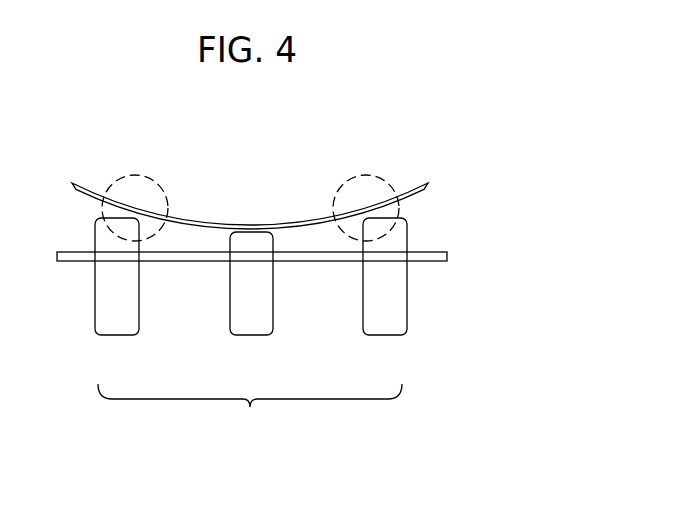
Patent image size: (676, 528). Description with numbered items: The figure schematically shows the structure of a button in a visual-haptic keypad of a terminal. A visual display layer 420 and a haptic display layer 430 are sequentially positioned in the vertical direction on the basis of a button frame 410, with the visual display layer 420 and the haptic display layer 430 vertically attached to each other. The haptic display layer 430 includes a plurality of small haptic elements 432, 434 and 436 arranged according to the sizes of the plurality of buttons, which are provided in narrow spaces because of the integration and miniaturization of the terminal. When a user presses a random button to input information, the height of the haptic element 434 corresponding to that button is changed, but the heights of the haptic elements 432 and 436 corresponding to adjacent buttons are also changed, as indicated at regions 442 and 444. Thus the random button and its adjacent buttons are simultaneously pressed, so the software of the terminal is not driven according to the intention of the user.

The button frame 410 is at (428, 183).
The visual display layer 420 is at (447, 257).
The haptic display layer 430 is at (250, 412).
The haptic element 432 is at (116, 335).
The haptic element 434 is at (251, 335).
The haptic element 436 is at (385, 335).
The adjacent button pressed region 442 is at (167, 192).
The adjacent button pressed region 444 is at (340, 192).